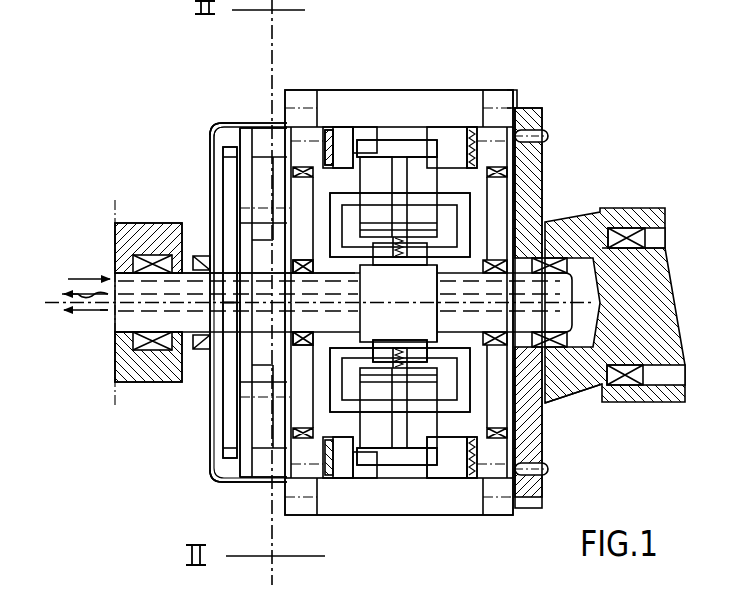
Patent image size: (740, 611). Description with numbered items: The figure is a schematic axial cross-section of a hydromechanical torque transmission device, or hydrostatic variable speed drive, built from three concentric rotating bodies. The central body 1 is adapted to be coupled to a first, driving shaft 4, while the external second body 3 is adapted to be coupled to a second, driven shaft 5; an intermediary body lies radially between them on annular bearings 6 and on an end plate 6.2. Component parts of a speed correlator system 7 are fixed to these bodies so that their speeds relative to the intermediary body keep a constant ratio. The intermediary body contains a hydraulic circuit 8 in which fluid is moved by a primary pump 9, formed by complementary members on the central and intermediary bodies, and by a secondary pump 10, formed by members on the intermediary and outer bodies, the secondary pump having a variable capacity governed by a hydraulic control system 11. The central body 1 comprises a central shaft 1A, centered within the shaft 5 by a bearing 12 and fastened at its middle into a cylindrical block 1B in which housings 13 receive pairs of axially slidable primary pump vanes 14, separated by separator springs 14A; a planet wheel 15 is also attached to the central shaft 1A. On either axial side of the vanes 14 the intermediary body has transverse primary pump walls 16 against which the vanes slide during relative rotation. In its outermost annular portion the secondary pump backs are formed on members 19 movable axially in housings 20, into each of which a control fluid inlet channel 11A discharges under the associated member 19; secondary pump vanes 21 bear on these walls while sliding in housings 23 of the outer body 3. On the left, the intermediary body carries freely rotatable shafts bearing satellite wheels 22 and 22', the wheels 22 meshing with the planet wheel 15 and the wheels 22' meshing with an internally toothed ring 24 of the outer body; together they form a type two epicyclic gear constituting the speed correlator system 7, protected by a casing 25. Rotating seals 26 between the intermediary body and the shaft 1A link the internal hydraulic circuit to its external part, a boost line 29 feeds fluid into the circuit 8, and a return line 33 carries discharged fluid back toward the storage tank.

The central body 1 is at (262, 263).
The central shaft 1A is at (293, 331).
The cylindrical block 1B is at (419, 283).
The external second body 3 is at (473, 87).
The first shaft 4 is at (117, 256).
The second shaft 5 is at (556, 220).
The annular bearings 6 is at (304, 346).
The end plate 6.2 is at (521, 181).
The speed correlator system 7 is at (233, 130).
The hydraulic circuit 8 is at (543, 404).
The primary pump 9 is at (442, 349).
The secondary pump 10 is at (447, 487).
The control system 11 is at (100, 312).
The control fluid inlet channel 11A is at (390, 495).
The bearing 12 is at (650, 252).
The housings 13 is at (392, 376).
The primary pump vanes 14 is at (382, 226).
The separator springs 14A is at (411, 337).
The planet wheel 15 is at (230, 352).
The primary pump walls 16 is at (376, 337).
The movable members 19 is at (366, 96).
The housings 20 is at (433, 96).
The secondary pump vanes 21 is at (340, 96).
The satellite wheels 22 is at (226, 302).
The satellite wheels 22' is at (222, 212).
The housings 23 is at (515, 92).
The internally toothed ring 24 is at (250, 128).
The casing 25 is at (226, 484).
The rotating seals 26 is at (398, 252).
The boost line 29 is at (86, 279).
The return line 33 is at (66, 310).